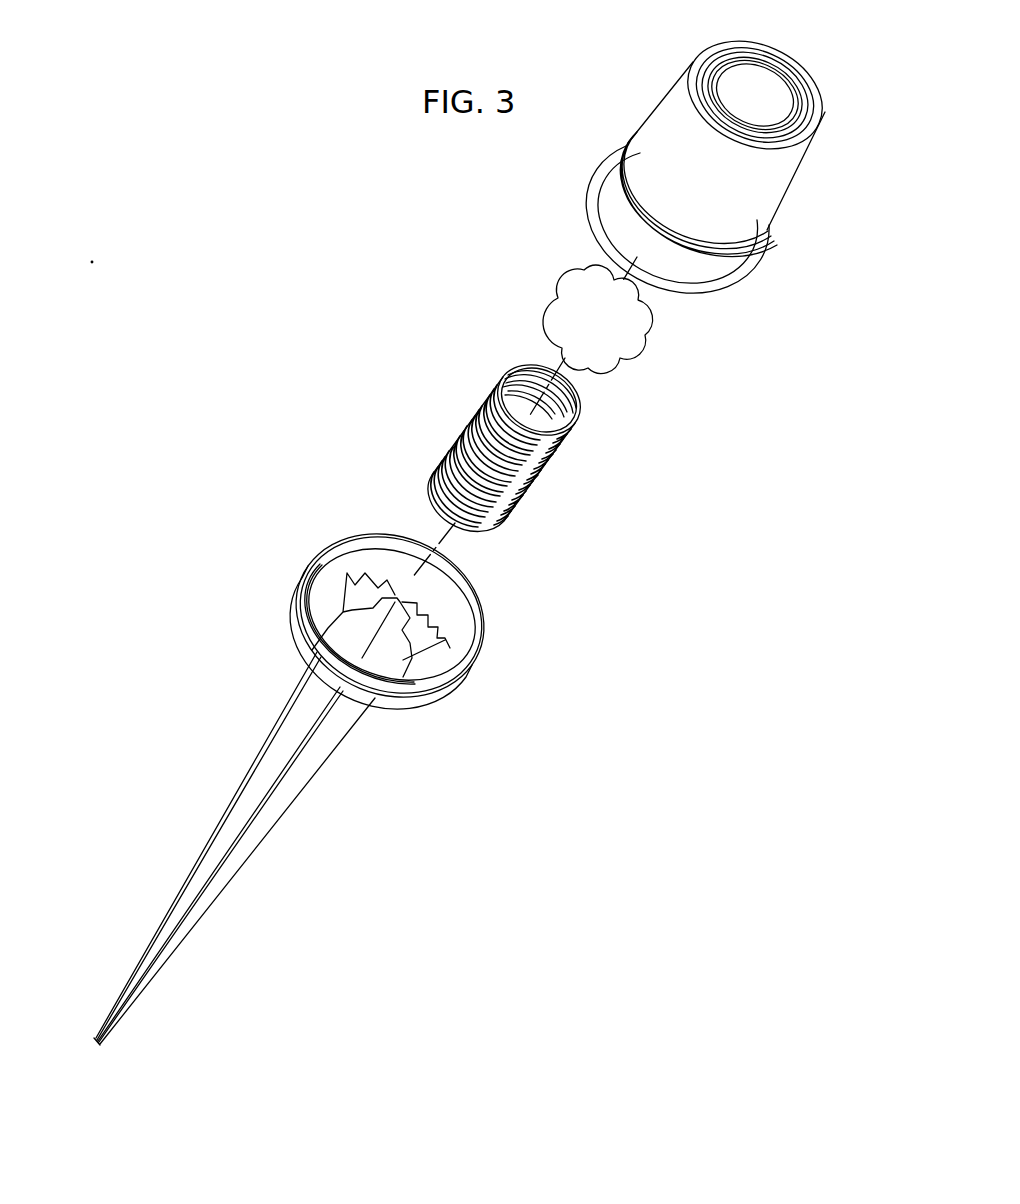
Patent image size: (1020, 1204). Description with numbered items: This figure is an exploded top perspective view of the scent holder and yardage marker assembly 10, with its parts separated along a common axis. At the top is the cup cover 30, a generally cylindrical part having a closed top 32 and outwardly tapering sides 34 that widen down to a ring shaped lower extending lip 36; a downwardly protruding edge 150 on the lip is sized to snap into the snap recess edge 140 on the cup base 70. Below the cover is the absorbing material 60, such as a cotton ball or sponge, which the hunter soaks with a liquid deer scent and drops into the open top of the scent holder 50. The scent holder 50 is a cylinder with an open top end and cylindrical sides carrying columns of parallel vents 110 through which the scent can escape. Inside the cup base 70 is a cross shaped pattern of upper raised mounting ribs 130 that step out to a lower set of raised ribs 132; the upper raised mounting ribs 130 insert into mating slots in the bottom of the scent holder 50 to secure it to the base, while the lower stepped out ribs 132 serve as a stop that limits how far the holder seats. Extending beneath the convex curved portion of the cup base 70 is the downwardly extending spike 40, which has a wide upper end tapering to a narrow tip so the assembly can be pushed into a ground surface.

The scent holder and yardage marker assembly 10 is at (283, 238).
The cup cover 30 is at (662, 153).
The closed top 32 is at (757, 88).
The outwardly tapering sides 34 is at (763, 188).
The ring shaped lower extending lip 36 is at (755, 252).
The downwardly protruding edge 150 is at (590, 197).
The absorbing material 60 is at (628, 337).
The scent holder 50 is at (523, 441).
The parallel vents 110 is at (445, 458).
The cup base 70 is at (403, 617).
The snap recess edge 140 is at (330, 555).
The upper raised mounting ribs 130 is at (407, 607).
The lower set of raised ribs 132 is at (408, 657).
The downwardly extending spike 40 is at (278, 800).